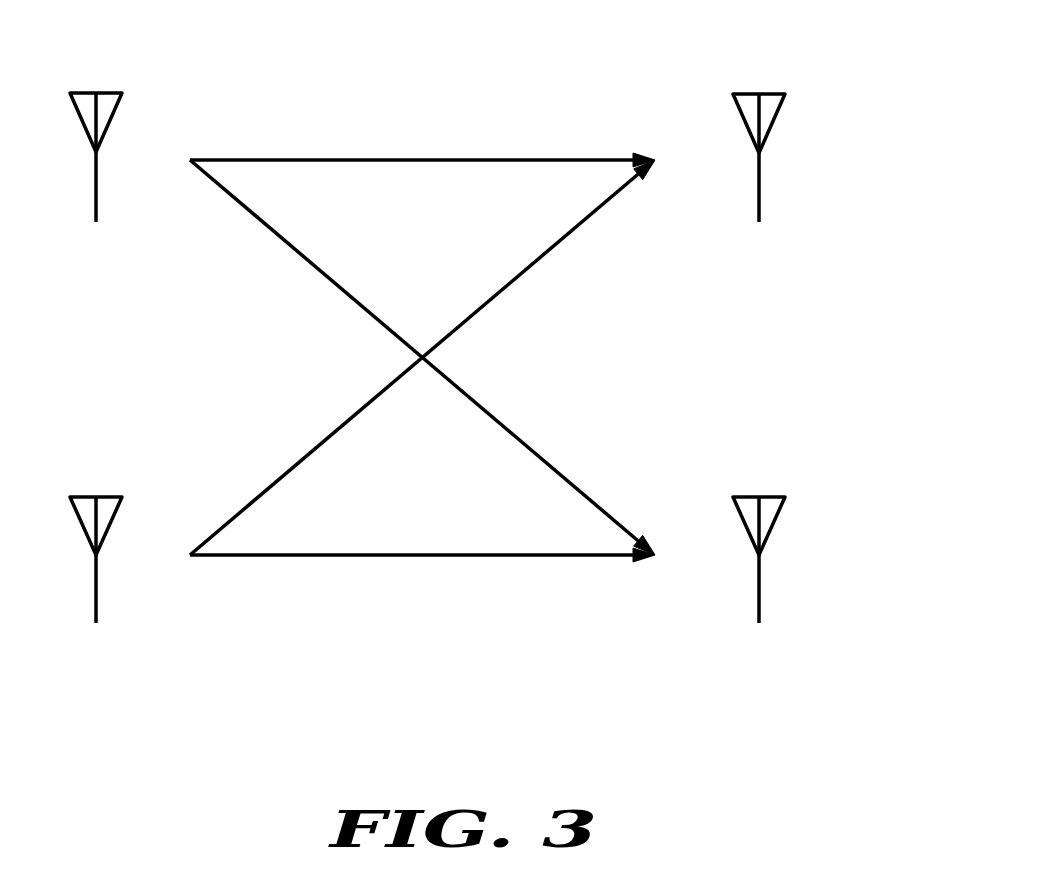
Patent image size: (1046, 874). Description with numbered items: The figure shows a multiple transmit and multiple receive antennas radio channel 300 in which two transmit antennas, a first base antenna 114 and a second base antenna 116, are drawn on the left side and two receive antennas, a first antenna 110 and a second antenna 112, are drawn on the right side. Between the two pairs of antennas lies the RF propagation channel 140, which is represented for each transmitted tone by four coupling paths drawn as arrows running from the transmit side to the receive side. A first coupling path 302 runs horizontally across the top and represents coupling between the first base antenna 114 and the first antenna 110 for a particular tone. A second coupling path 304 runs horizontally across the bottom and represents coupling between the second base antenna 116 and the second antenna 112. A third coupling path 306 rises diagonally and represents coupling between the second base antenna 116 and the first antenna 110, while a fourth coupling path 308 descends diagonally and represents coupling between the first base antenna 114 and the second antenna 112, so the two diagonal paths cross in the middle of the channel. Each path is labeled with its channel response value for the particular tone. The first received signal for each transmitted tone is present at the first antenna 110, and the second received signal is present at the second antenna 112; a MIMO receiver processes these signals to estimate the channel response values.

The multiple transmit and multiple receive antennas radio channel 300 is at (458, 386).
The RF propagation channel 140 is at (422, 312).
The first base antenna 114 is at (96, 181).
The second base antenna 116 is at (96, 587).
The first antenna 110 is at (759, 181).
The second antenna 112 is at (759, 586).
The first coupling path 302 is at (532, 159).
The second coupling path 304 is at (534, 556).
The third coupling path 306 is at (527, 271).
The fourth coupling path 308 is at (527, 445).